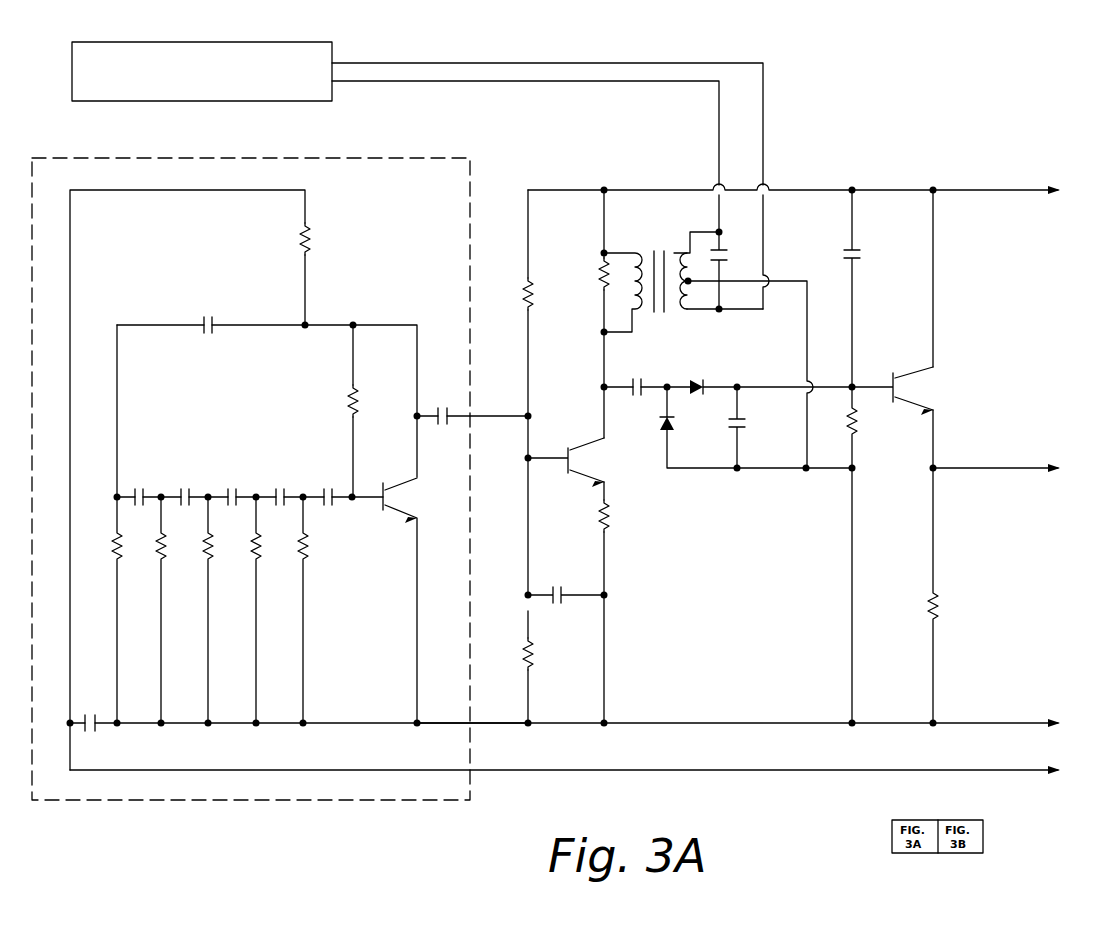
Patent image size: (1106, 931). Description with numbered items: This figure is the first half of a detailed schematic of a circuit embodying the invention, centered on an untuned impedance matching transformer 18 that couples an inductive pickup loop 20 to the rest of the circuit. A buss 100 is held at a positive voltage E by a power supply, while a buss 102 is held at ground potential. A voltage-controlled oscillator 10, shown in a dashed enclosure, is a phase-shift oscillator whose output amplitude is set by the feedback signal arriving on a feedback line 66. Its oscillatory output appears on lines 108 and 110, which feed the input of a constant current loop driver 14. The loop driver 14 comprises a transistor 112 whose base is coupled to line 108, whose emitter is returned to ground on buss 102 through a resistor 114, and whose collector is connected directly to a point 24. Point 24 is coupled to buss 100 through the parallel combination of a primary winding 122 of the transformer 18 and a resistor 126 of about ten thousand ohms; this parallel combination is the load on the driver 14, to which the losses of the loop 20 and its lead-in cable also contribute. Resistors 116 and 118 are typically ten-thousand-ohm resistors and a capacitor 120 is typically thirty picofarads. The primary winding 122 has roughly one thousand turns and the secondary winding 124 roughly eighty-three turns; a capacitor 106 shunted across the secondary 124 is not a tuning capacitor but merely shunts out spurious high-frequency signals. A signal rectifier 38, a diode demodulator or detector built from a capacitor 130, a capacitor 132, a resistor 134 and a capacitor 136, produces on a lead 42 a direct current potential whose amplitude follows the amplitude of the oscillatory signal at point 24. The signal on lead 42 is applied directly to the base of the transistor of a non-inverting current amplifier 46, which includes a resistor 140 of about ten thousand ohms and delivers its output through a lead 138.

The voltage-controlled oscillator 10 is at (213, 795).
The constant current loop driver 14 is at (626, 502).
The impedance matching transformer 18 is at (660, 254).
The inductive pickup loop 20 is at (72, 78).
The point 24 is at (604, 388).
The signal rectifier 38 is at (672, 474).
The lead 42 is at (893, 387).
The current amplifier 46 is at (942, 362).
The feedback line 66 is at (818, 772).
The buss 100 is at (1020, 188).
The buss 102 is at (780, 727).
The capacitor 106 is at (720, 258).
The line 108 is at (528, 410).
The line 110 is at (500, 725).
The transistor 112 is at (572, 462).
The resistor 114 is at (600, 522).
The resistor 116 is at (538, 304).
The resistor 118 is at (524, 655).
The capacitor 120 is at (578, 605).
The primary winding 122 is at (640, 312).
The secondary winding 124 is at (678, 312).
The resistor 126 is at (600, 265).
The capacitor 130 is at (643, 395).
The capacitor 132 is at (742, 428).
The resistor 134 is at (856, 428).
The capacitor 136 is at (855, 253).
The lead 138 is at (1018, 466).
The resistor 140 is at (930, 623).